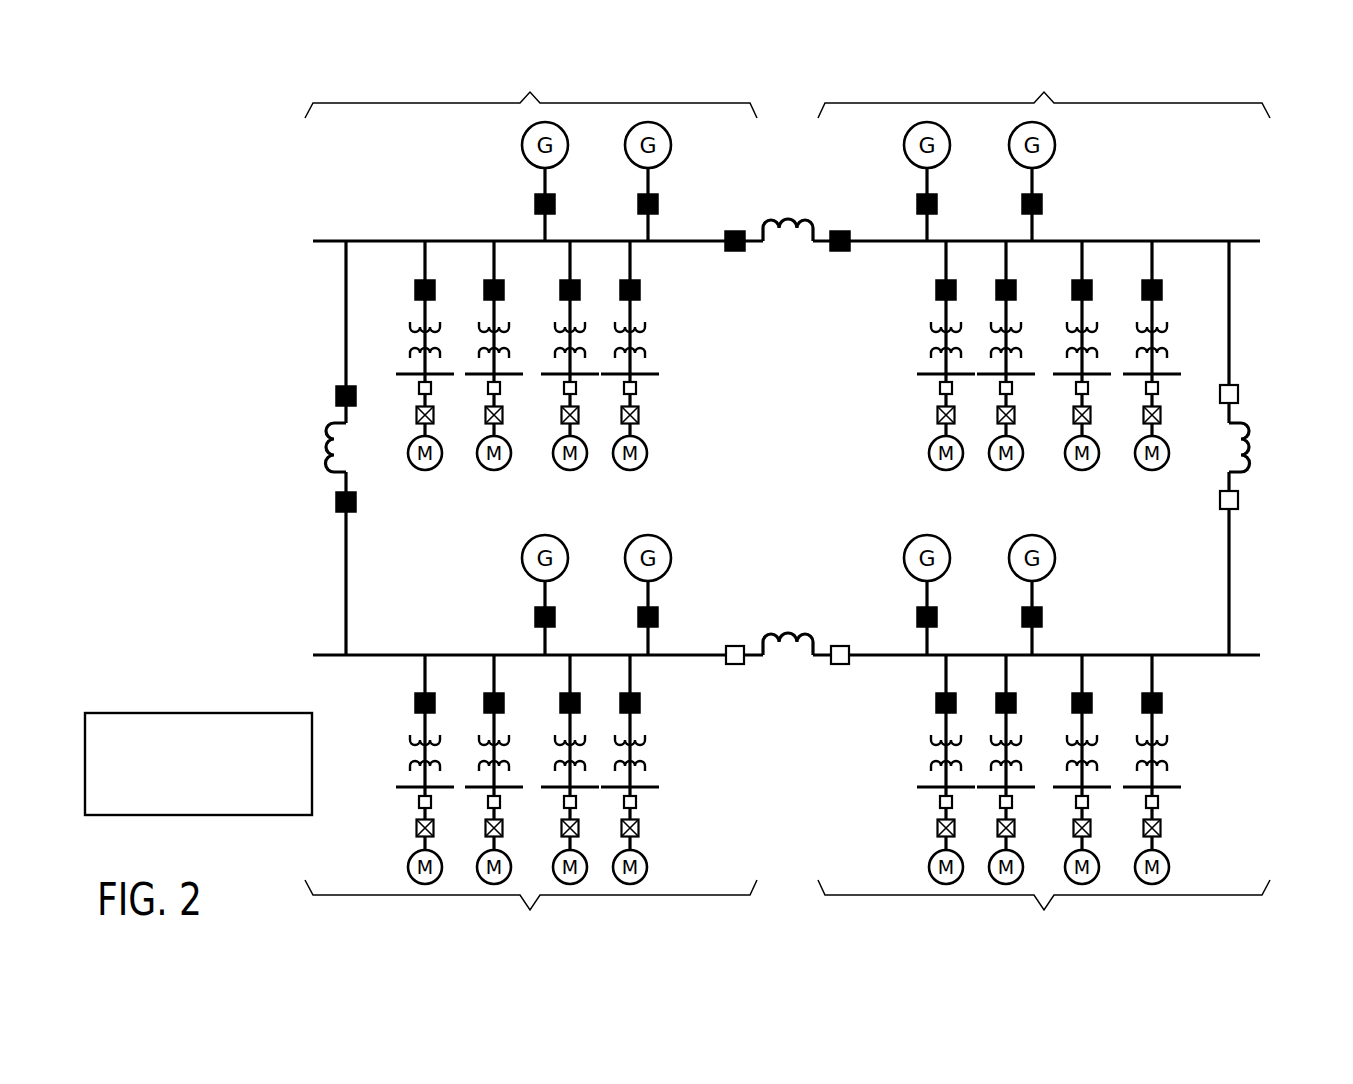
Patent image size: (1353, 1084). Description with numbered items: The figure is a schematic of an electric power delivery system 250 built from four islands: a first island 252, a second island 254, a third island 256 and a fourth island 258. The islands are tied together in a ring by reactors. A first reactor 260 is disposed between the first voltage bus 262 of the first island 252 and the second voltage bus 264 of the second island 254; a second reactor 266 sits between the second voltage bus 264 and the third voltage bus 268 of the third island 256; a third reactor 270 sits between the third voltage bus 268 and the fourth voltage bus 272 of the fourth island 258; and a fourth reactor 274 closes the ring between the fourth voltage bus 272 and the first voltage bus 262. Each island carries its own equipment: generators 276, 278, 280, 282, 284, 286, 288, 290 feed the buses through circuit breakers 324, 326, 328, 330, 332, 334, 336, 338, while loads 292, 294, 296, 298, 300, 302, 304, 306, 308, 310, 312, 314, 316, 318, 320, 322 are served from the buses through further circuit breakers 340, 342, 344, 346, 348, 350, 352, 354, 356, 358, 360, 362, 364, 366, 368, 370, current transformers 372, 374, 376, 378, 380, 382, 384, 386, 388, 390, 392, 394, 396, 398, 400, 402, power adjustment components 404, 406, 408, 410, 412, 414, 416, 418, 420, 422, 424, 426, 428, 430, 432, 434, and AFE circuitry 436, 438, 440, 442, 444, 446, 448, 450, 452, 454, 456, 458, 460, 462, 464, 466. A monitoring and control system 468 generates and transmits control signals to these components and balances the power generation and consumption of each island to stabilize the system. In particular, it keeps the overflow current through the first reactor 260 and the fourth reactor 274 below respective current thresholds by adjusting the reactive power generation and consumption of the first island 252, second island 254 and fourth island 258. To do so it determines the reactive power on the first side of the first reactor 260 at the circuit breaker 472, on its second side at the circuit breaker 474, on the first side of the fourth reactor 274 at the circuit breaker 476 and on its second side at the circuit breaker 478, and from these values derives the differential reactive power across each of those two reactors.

The electric power delivery system 250 is at (252, 150).
The first island 252 is at (531, 88).
The second island 254 is at (1044, 88).
The third island 256 is at (1044, 911).
The fourth island 258 is at (531, 912).
The first reactor 260 is at (791, 218).
The first voltage bus 262 is at (382, 241).
The second voltage bus 264 is at (1195, 241).
The second reactor 266 is at (1251, 457).
The third voltage bus 268 is at (1195, 655).
The third reactor 270 is at (773, 633).
The fourth voltage bus 272 is at (380, 655).
The fourth reactor 274 is at (325, 453).
The generator 276 is at (522, 145).
The generator 278 is at (671, 145).
The generator 280 is at (904, 145).
The generator 282 is at (1055, 145).
The generator 284 is at (1055, 558).
The generator 286 is at (904, 558).
The generator 288 is at (671, 558).
The generator 290 is at (522, 558).
The load 292 is at (425, 470).
The load 294 is at (494, 470).
The load 296 is at (570, 470).
The load 298 is at (630, 470).
The load 300 is at (946, 470).
The load 302 is at (1006, 470).
The load 304 is at (1082, 470).
The load 306 is at (1152, 470).
The load 308 is at (1169, 867).
The load 310 is at (1100, 867).
The load 312 is at (1027, 867).
The load 314 is at (929, 867).
The load 316 is at (647, 867).
The load 318 is at (554, 867).
The load 320 is at (476, 867).
The load 322 is at (408, 867).
The circuit breaker 324 is at (535, 204).
The circuit breaker 326 is at (638, 204).
The circuit breaker 328 is at (937, 204).
The circuit breaker 330 is at (1042, 204).
The circuit breaker 332 is at (1022, 617).
The circuit breaker 334 is at (917, 617).
The circuit breaker 336 is at (638, 617).
The circuit breaker 338 is at (535, 617).
The circuit breaker 340 is at (414, 290).
The circuit breaker 342 is at (484, 290).
The circuit breaker 344 is at (560, 290).
The circuit breaker 346 is at (642, 290).
The circuit breaker 348 is at (936, 290).
The circuit breaker 350 is at (1017, 290).
The circuit breaker 352 is at (1093, 290).
The circuit breaker 354 is at (1162, 290).
The circuit breaker 356 is at (1163, 703).
The circuit breaker 358 is at (1093, 703).
The circuit breaker 360 is at (1018, 703).
The circuit breaker 362 is at (935, 703).
The circuit breaker 364 is at (642, 703).
The circuit breaker 366 is at (559, 703).
The circuit breaker 368 is at (483, 703).
The circuit breaker 370 is at (414, 703).
The current transformer 372 is at (410, 330).
The current transformer 374 is at (480, 330).
The current transformer 376 is at (585, 325).
The current transformer 378 is at (645, 330).
The current transformer 380 is at (931, 330).
The current transformer 382 is at (995, 332).
The current transformer 384 is at (1090, 330).
The current transformer 386 is at (1163, 330).
The current transformer 388 is at (1167, 742).
The current transformer 390 is at (1098, 742).
The current transformer 392 is at (995, 742).
The current transformer 394 is at (931, 742).
The current transformer 396 is at (648, 742).
The current transformer 398 is at (585, 740).
The current transformer 400 is at (480, 742).
The current transformer 402 is at (410, 742).
The power adjustment component 404 is at (400, 375).
The power adjustment component 406 is at (515, 372).
The power adjustment component 408 is at (557, 376).
The power adjustment component 410 is at (658, 376).
The power adjustment component 412 is at (917, 374).
The power adjustment component 414 is at (1028, 377).
The power adjustment component 416 is at (1062, 373).
The power adjustment component 418 is at (1176, 376).
The power adjustment component 420 is at (1175, 789).
The power adjustment component 422 is at (1062, 787).
The power adjustment component 424 is at (987, 797).
The power adjustment component 426 is at (922, 789).
The power adjustment component 428 is at (655, 789).
The power adjustment component 430 is at (585, 789).
The power adjustment component 432 is at (513, 787).
The power adjustment component 434 is at (405, 789).
The AFE circuitry 436 is at (416, 415).
The AFE circuitry 438 is at (483, 417).
The AFE circuitry 440 is at (578, 420).
The AFE circuitry 442 is at (643, 418).
The AFE circuitry 444 is at (936, 415).
The AFE circuitry 446 is at (995, 417).
The AFE circuitry 448 is at (1090, 417).
The AFE circuitry 450 is at (1161, 418).
The AFE circuitry 452 is at (1161, 828).
The AFE circuitry 454 is at (1093, 827).
The AFE circuitry 456 is at (1017, 827).
The AFE circuitry 458 is at (936, 828).
The AFE circuitry 460 is at (640, 828).
The AFE circuitry 462 is at (548, 813).
The AFE circuitry 464 is at (475, 813).
The AFE circuitry 466 is at (416, 828).
The monitoring and control system 468 is at (197, 713).
The circuit breaker 472 is at (733, 231).
The circuit breaker 474 is at (840, 231).
The circuit breaker 476 is at (336, 398).
The circuit breaker 478 is at (336, 502).